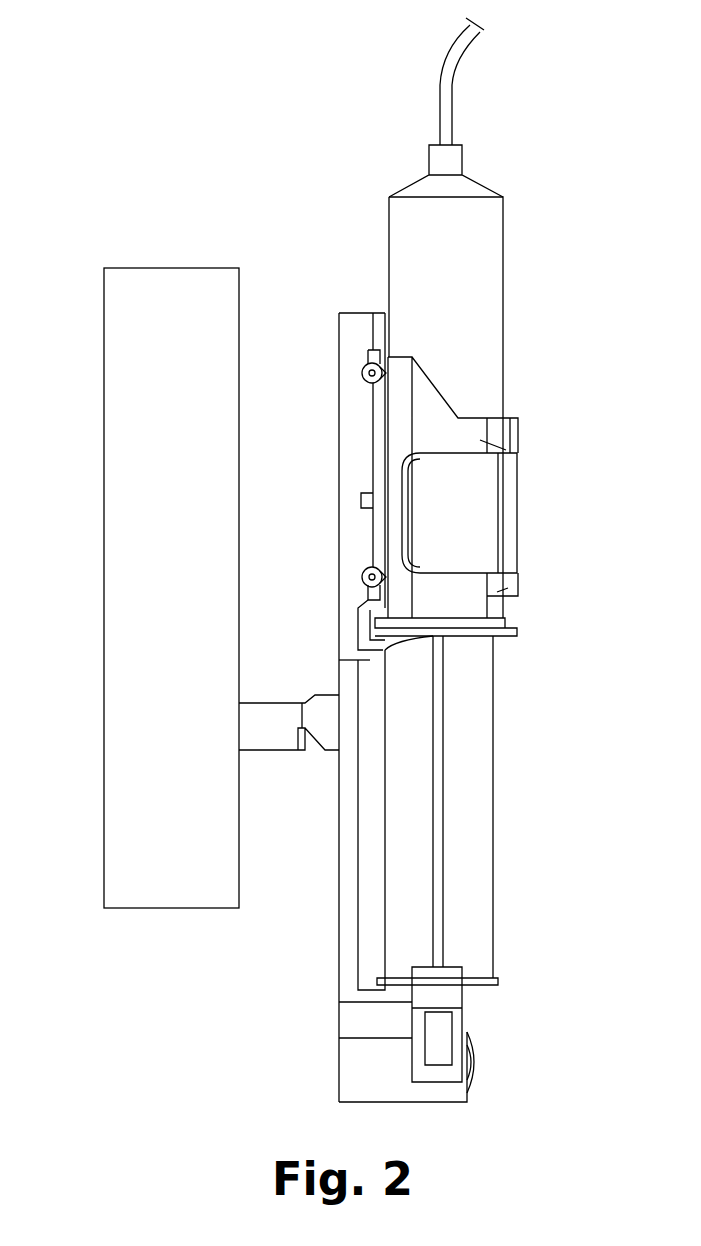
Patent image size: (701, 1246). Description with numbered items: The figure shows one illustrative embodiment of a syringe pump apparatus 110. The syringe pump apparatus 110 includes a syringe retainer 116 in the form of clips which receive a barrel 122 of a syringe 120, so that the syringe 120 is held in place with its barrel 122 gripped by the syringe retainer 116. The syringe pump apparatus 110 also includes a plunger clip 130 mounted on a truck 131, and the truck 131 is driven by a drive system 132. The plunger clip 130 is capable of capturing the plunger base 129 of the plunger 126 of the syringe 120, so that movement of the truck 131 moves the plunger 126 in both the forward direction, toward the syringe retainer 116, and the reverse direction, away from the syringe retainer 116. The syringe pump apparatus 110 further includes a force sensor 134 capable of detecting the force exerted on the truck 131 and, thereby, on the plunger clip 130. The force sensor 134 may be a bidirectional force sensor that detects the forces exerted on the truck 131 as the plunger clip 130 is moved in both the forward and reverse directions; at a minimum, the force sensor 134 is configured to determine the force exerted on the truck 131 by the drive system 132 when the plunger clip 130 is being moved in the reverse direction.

The syringe pump apparatus 110 is at (158, 92).
The syringe retainer 116 is at (462, 616).
The syringe 120 is at (524, 220).
The barrel 122 is at (490, 268).
The plunger 126 is at (485, 793).
The plunger base 129 is at (478, 978).
The plunger clip 130 is at (452, 997).
The truck 131 is at (350, 946).
The drive system 132 is at (118, 675).
The force sensor 134 is at (270, 742).